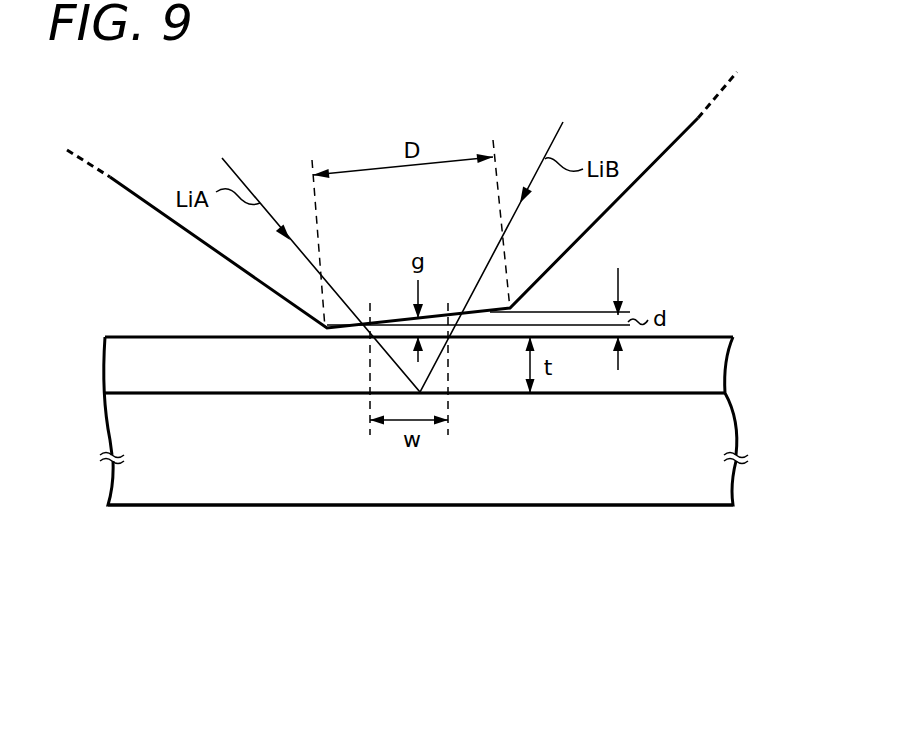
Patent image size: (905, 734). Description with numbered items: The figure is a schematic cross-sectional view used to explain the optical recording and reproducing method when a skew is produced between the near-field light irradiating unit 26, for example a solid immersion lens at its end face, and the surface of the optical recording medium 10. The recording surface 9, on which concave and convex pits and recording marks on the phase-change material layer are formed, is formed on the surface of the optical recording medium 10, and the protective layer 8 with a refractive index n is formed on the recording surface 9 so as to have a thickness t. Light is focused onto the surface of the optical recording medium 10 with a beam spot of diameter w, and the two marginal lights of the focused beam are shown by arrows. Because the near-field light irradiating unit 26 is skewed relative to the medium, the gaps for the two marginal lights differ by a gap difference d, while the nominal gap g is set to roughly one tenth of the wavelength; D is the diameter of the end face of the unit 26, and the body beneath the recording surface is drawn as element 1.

The substrate 1 is at (710, 434).
The protective layer 8 is at (710, 366).
The recording surface 9 is at (163, 393).
The optical recording medium 10 is at (706, 562).
The near-field light irradiating unit 26 is at (634, 190).